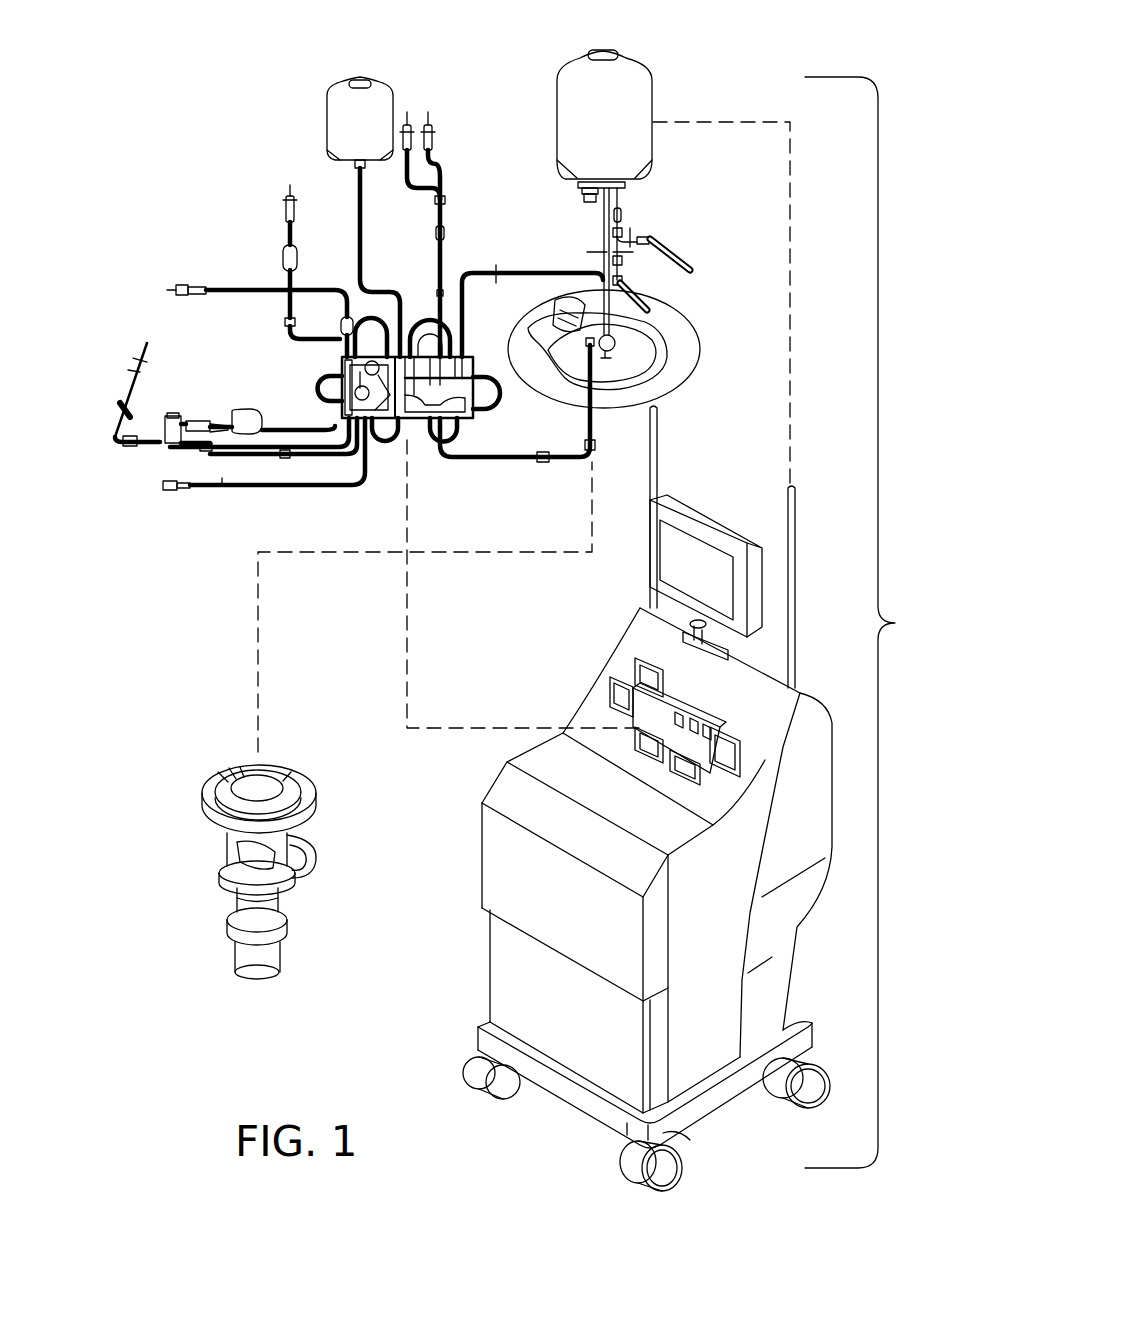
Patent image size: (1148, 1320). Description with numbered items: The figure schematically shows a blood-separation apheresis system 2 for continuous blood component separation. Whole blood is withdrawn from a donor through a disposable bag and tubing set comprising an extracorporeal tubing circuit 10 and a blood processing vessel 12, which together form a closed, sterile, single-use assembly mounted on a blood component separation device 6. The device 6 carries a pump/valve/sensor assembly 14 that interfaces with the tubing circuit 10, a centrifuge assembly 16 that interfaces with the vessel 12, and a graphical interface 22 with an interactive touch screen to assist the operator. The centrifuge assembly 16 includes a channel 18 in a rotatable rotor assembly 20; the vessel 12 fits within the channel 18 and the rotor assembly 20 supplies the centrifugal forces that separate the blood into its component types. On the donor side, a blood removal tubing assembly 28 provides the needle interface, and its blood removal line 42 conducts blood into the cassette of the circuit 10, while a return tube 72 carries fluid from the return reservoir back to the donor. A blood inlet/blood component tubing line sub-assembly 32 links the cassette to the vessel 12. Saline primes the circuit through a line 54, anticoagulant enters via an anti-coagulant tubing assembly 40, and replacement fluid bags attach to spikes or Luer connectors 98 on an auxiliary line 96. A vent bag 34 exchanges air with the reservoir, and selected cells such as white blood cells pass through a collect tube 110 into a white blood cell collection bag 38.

The blood-separation apheresis system 2 is at (867, 622).
The blood component separation device 6 is at (480, 940).
The extracorporeal tubing circuit 10 is at (292, 355).
The blood processing vessel 12 is at (690, 380).
The pump/valve/sensor assembly 14 is at (607, 708).
The centrifuge assembly 16 is at (249, 846).
The channel 18 is at (300, 800).
The rotatable rotor assembly 20 is at (220, 870).
The graphical interface 22 is at (687, 560).
The blood removal tubing assembly 28 is at (242, 398).
The blood inlet/blood component tubing line sub-assembly 32 is at (490, 466).
The vent bag 34 is at (388, 101).
The white blood cell collection bag 38 is at (652, 83).
The anti-coagulant tubing assembly 40 is at (252, 292).
The blood removal line 42 is at (342, 450).
The saline line 54 is at (287, 215).
The return tube 72 is at (322, 487).
The auxiliary line 96 is at (446, 220).
The spikes or Luer connectors 98 is at (432, 140).
The collect tube 110 is at (490, 272).